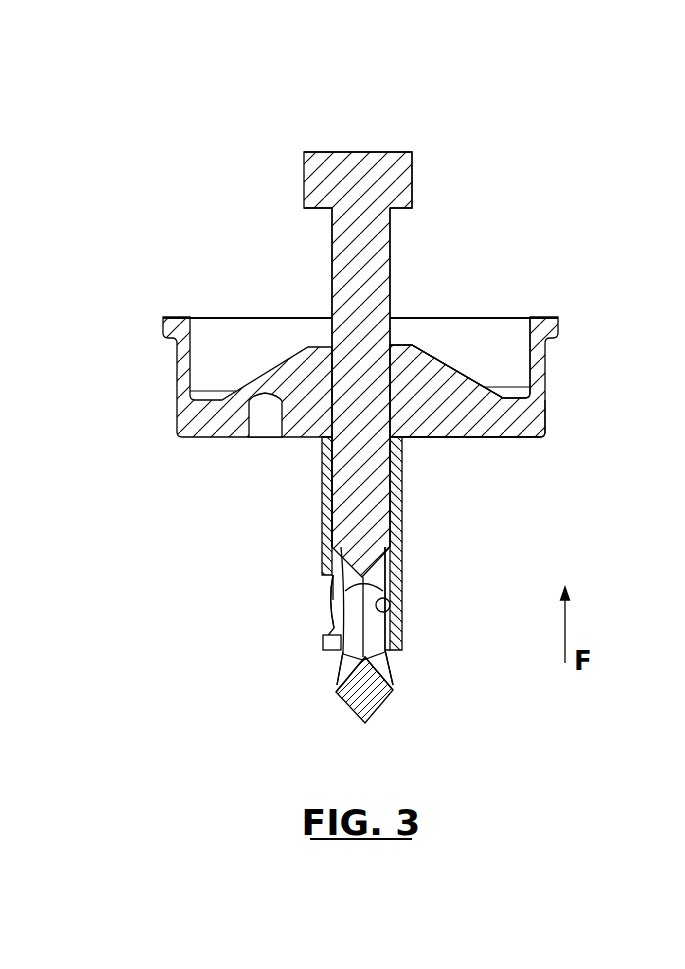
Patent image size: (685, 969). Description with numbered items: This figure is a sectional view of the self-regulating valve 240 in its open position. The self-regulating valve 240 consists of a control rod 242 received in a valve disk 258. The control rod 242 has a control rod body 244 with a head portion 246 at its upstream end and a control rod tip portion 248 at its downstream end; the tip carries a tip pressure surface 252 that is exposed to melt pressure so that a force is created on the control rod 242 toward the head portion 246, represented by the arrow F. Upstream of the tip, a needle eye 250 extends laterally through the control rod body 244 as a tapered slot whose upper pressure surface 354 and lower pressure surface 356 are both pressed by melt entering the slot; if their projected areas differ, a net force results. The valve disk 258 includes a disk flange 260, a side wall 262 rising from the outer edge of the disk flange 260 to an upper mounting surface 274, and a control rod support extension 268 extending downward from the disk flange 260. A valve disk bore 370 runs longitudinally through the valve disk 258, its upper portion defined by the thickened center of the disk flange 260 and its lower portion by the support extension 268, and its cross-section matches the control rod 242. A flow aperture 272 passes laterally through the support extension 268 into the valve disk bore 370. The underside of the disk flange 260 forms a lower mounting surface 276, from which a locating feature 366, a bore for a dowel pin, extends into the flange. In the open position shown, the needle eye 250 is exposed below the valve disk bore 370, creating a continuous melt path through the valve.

The self-regulating valve 240 is at (550, 183).
The control rod 242 is at (284, 257).
The control rod body 244 is at (390, 267).
The head portion 246 is at (398, 178).
The control rod tip portion 248 is at (428, 692).
The needle eye 250 is at (355, 622).
The tip pressure surface 252 is at (387, 707).
The valve disk 258 is at (138, 410).
The disk flange 260 is at (463, 417).
The side wall 262 is at (547, 378).
The control rod support extension 268 is at (403, 556).
The flow aperture 272 is at (305, 619).
The upper mounting surface 274 is at (548, 304).
The lower mounting surface 276 is at (542, 446).
The upper pressure surface 354 is at (333, 597).
The lower pressure surface 356 is at (340, 660).
The locating feature 366 is at (262, 418).
The valve disk bore 370 is at (392, 611).